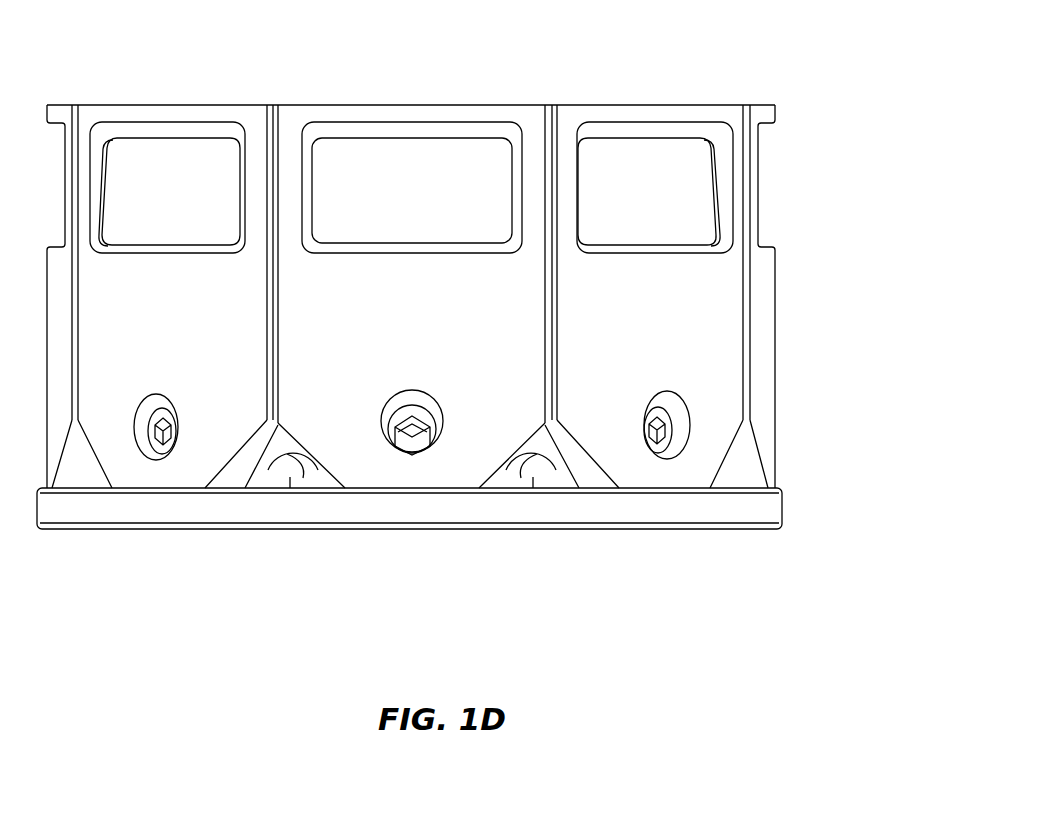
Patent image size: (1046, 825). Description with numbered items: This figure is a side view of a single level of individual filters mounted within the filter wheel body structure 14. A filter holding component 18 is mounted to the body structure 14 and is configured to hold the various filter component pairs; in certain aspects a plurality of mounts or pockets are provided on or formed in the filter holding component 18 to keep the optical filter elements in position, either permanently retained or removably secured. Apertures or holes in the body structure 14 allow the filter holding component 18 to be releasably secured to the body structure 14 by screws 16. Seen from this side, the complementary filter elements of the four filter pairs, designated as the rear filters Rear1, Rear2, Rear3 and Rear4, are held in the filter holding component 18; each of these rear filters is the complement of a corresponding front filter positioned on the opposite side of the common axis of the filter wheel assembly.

The rear filter element Rear1 is at (758, 185).
The rear filter element Rear2 is at (617, 183).
The rear filter element Rear3 is at (448, 173).
The rear filter element Rear4 is at (175, 182).
The filter holding component 18 is at (397, 108).
The screws 16 is at (412, 442).
The body structure 14 is at (625, 510).